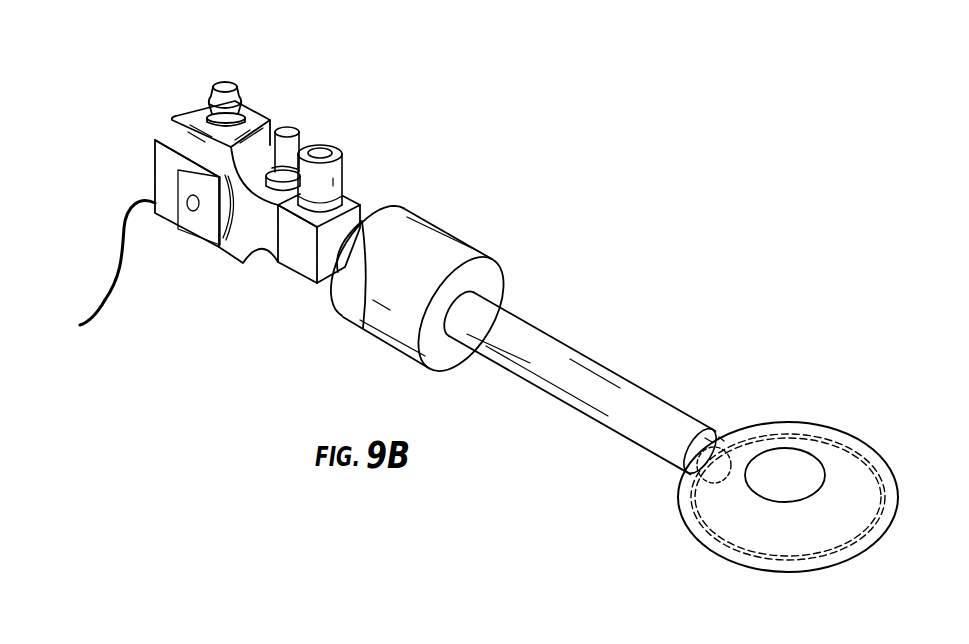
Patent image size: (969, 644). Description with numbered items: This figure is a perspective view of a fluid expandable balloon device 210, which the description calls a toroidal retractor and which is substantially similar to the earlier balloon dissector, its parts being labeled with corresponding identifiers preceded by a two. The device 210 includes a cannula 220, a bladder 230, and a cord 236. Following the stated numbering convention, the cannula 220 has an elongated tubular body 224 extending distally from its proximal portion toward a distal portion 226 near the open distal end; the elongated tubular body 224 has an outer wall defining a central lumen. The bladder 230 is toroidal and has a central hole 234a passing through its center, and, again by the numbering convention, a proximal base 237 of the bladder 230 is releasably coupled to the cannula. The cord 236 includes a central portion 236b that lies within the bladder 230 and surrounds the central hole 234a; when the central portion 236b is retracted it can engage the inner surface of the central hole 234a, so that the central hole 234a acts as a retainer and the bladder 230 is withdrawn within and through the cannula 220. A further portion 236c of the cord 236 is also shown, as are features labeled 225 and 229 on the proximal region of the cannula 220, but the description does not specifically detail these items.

The fluid expandable balloon device 210 is at (493, 131).
The cannula 220 is at (526, 247).
The elongated tubular body 224 is at (562, 338).
The pin connector 225 is at (293, 126).
The tubular connector 229 is at (338, 147).
The distal portion 226 is at (717, 433).
The proximal base 237 is at (683, 473).
The bladder 230 is at (853, 560).
The central hole 234a is at (795, 463).
The central portion 236b is at (870, 462).
The cord 236 is at (121, 238).
The cable end 236c is at (80, 325).